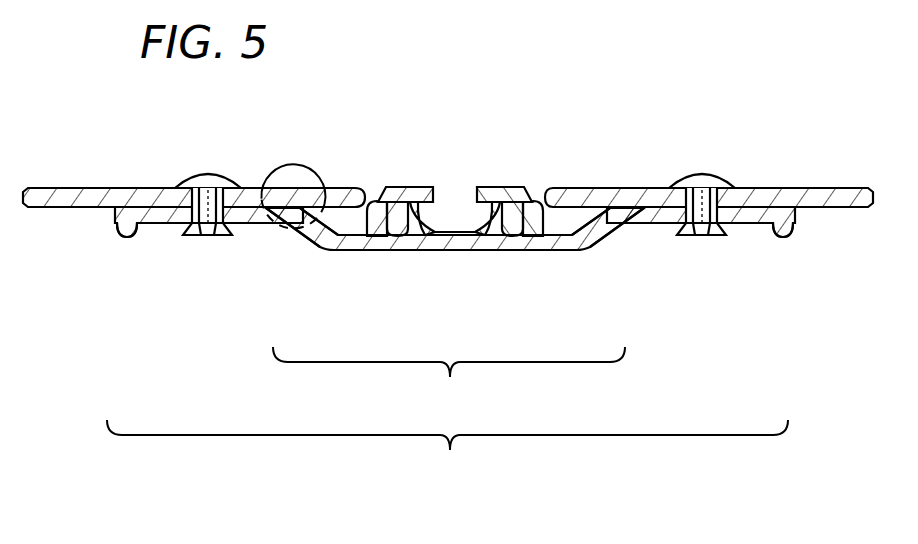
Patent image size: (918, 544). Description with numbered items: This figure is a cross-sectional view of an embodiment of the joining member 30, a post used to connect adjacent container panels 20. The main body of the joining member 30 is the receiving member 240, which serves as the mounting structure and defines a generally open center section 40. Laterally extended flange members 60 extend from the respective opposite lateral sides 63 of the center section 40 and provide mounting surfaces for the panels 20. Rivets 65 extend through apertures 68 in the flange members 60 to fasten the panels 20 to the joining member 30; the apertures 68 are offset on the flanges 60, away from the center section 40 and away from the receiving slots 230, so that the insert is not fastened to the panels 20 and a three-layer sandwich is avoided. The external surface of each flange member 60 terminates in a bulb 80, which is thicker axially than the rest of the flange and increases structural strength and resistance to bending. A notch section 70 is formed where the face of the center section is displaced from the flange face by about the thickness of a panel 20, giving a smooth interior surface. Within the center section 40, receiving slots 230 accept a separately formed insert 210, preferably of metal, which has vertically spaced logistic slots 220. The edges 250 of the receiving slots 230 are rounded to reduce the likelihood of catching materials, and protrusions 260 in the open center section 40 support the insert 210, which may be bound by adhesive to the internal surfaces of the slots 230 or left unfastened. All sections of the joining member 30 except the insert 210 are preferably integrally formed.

The panel 20 is at (110, 188).
The joining member 30 is at (447, 451).
The center section 40 is at (455, 308).
The flange member 60 is at (250, 225).
The lateral side 63 is at (288, 238).
The rivet 65 is at (214, 175).
The aperture 68 is at (193, 234).
The notch section 70 is at (316, 163).
The bulb 80 is at (123, 226).
The insert 210 is at (513, 188).
The logistic slot 220 is at (457, 188).
The receiving slot 230 is at (306, 236).
The receiving member 240 is at (427, 252).
The edge 250 is at (362, 189).
The protrusion 260 is at (432, 313).